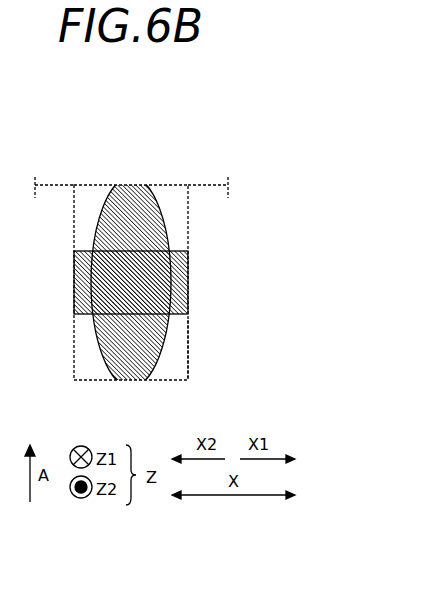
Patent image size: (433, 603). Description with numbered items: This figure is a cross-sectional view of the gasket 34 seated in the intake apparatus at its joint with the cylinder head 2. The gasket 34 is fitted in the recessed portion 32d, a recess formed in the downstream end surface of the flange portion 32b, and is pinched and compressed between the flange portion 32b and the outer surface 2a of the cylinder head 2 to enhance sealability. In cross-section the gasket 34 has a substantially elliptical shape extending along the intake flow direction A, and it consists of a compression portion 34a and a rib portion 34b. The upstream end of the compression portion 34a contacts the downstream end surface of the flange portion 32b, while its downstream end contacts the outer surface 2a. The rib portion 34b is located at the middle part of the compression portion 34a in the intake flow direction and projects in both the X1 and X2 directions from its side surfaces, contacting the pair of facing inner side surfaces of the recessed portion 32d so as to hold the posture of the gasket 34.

The cylinder head 2 is at (74, 184).
The outer surface of the cylinder head 2a is at (43, 184).
The flange portion 32b is at (203, 196).
The recessed portion 32d is at (188, 351).
The gasket 34 is at (171, 250).
The compression portion 34a is at (167, 233).
The rib portion 34b is at (190, 285).